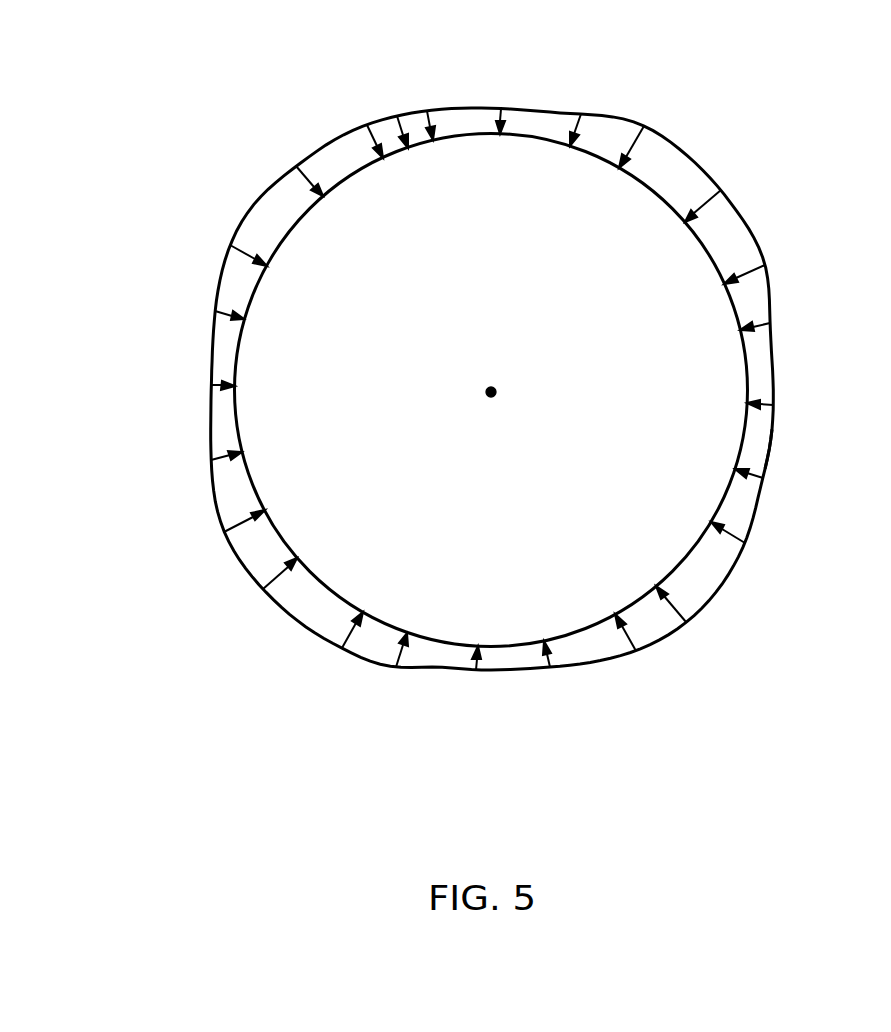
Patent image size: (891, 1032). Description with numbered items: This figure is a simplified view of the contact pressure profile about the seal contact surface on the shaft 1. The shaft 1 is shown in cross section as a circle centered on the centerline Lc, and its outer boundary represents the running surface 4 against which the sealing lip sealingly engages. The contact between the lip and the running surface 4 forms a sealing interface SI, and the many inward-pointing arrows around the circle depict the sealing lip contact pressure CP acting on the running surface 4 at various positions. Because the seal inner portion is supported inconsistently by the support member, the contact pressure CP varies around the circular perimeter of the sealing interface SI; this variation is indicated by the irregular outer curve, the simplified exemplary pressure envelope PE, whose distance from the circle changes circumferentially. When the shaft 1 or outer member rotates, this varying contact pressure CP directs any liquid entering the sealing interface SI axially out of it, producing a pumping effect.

The inner shaft 1 is at (333, 577).
The running surface 4 is at (752, 442).
The pressure envelope PE is at (752, 226).
The centerline Lc is at (494, 388).
The sealing interface SI is at (400, 116).
The contact pressure CP is at (300, 168).